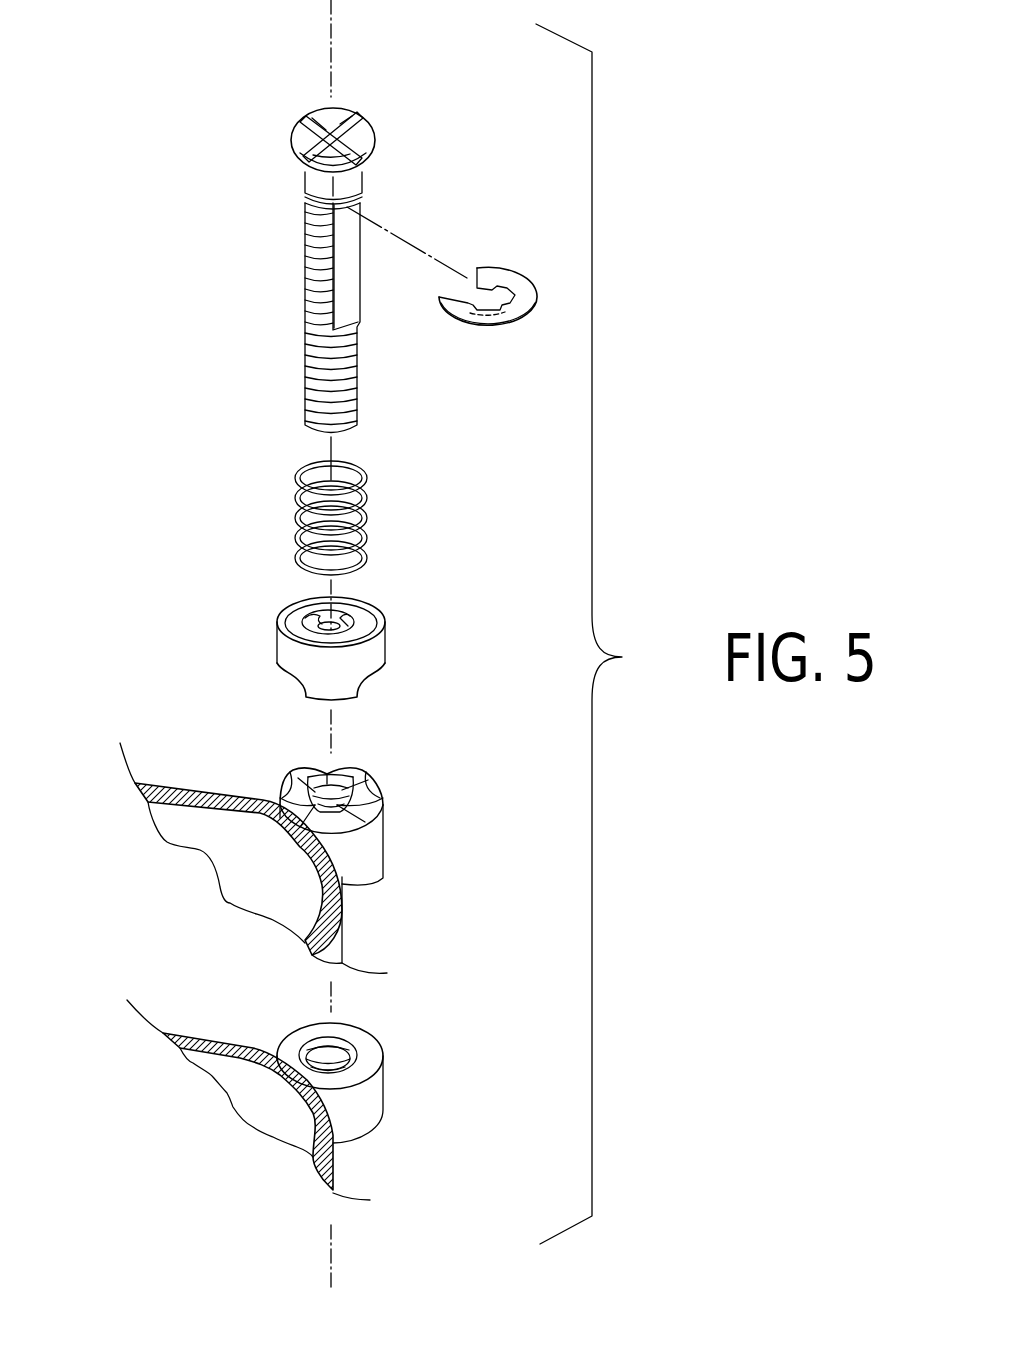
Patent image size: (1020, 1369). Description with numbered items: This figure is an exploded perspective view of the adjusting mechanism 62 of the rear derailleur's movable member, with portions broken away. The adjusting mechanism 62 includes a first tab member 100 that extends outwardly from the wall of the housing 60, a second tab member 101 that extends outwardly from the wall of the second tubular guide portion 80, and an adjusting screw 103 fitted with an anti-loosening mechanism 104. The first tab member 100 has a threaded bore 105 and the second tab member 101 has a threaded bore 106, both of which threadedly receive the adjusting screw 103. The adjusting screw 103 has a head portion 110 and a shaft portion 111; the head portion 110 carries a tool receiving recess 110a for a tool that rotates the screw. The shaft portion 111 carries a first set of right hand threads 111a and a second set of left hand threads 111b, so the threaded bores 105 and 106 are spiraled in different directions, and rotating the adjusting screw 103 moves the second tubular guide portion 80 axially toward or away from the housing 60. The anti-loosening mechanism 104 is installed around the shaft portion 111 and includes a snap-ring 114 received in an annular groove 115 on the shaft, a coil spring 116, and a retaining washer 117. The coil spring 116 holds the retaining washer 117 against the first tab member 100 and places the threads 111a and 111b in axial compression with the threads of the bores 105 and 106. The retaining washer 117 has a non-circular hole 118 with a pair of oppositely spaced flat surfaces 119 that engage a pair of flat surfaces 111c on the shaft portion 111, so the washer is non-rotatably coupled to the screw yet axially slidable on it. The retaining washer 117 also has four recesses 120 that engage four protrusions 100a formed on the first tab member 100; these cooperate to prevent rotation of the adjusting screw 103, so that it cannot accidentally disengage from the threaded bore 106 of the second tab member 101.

The adjusting mechanism 62 is at (213, 345).
The adjusting screw 103 is at (352, 102).
The head portion 110 is at (368, 128).
The cross recess 110a is at (310, 115).
The shaft portion 111 is at (290, 236).
The first set of right hand threads 111a is at (305, 267).
The second set of left hand threads 111b is at (353, 385).
The flat surfaces 111c is at (350, 293).
The annular groove 115 is at (360, 197).
The snap-ring 114 is at (495, 267).
The anti-loosening mechanism 104 is at (455, 548).
The coil spring 116 is at (367, 503).
The retaining washer 117 is at (265, 632).
The non-circular hole 118 is at (347, 613).
The flat surfaces 119 is at (318, 607).
The recesses 120 is at (300, 680).
The housing 60 is at (345, 937).
The first tab member 100 is at (385, 848).
The protrusions 100a is at (300, 780).
The threaded bore 105 is at (332, 788).
The second tubular guide portion 80 is at (333, 1167).
The second tab member 101 is at (377, 1092).
The threaded bore 106 is at (345, 1042).